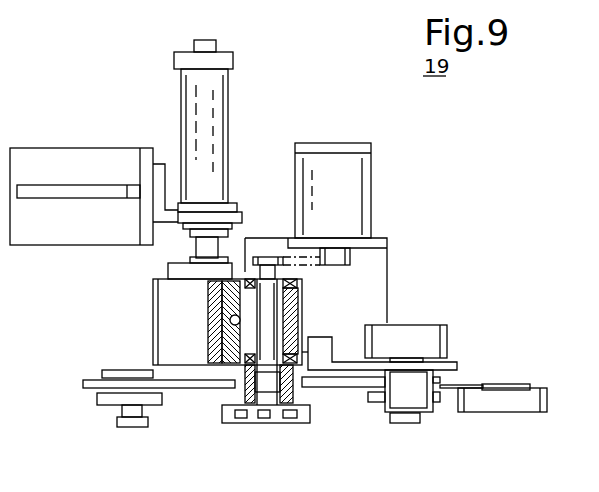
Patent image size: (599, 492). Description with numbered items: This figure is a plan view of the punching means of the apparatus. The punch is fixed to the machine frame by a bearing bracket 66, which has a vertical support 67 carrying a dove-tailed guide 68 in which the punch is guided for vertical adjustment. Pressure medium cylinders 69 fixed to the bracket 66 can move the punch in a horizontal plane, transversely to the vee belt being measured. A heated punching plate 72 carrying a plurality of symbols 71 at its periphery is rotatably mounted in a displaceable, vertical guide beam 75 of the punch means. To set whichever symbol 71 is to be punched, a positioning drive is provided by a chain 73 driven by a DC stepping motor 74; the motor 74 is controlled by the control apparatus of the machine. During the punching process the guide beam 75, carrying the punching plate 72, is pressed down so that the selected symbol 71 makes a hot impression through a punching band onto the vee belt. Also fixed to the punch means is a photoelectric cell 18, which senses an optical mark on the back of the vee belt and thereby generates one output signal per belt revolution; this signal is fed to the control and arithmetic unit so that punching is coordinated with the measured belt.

The photoelectric cell 18 is at (530, 397).
The bearing bracket 66 is at (70, 157).
The vertical support 67 is at (163, 302).
The dove-tailed guide 68 is at (217, 318).
The pressure medium cylinders 69 is at (222, 95).
The symbols 71 is at (242, 422).
The heated punching plate 72 is at (282, 422).
The chain 73 is at (310, 266).
The DC stepping motor 74 is at (357, 172).
The vertical guide beam 75 is at (295, 308).